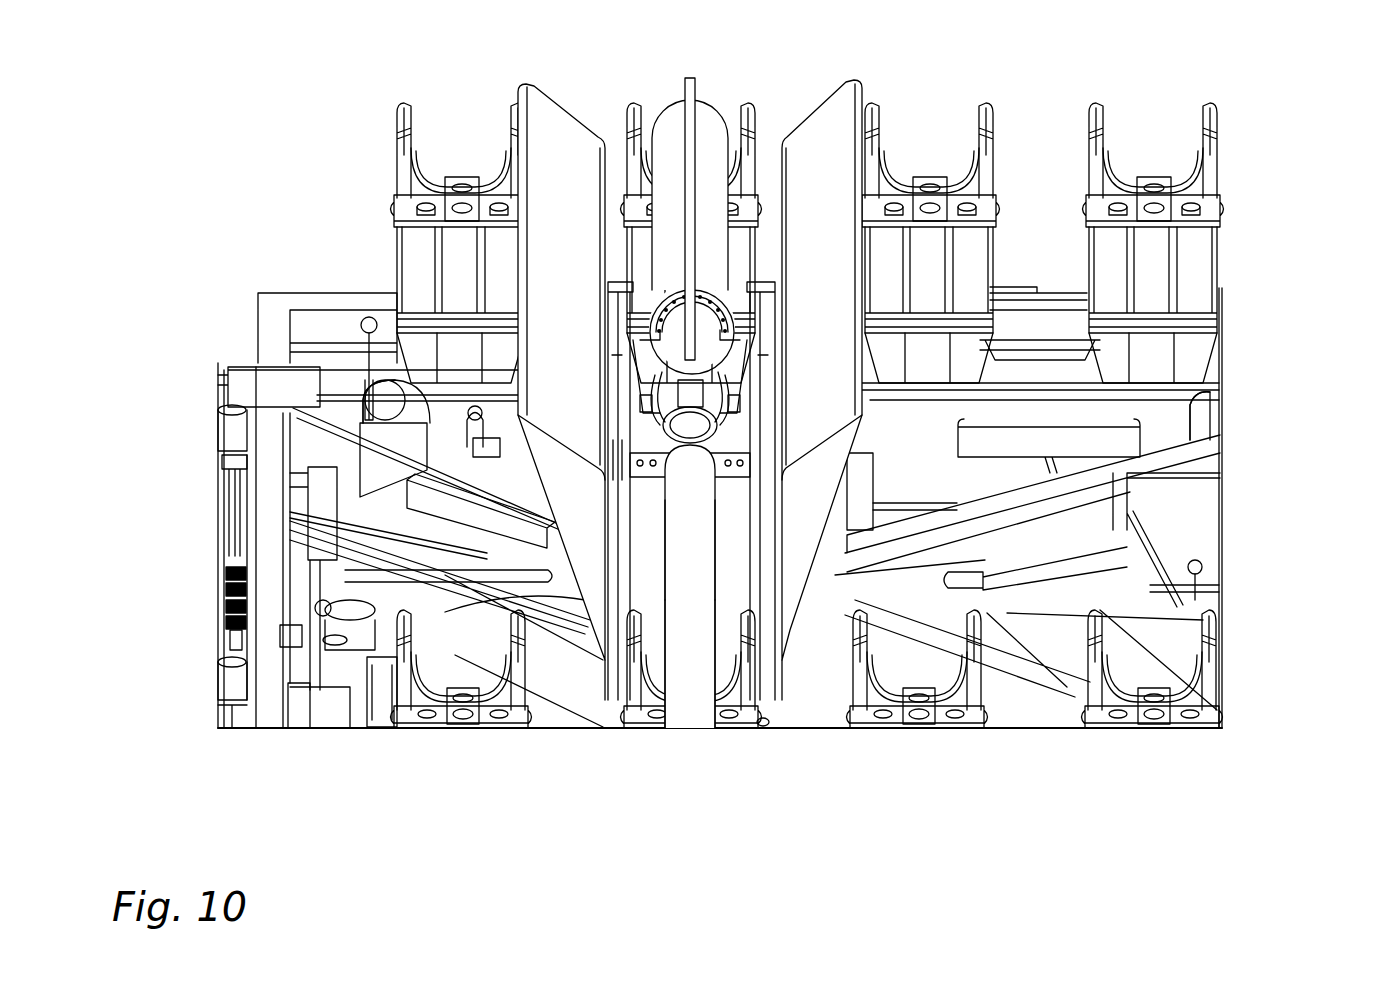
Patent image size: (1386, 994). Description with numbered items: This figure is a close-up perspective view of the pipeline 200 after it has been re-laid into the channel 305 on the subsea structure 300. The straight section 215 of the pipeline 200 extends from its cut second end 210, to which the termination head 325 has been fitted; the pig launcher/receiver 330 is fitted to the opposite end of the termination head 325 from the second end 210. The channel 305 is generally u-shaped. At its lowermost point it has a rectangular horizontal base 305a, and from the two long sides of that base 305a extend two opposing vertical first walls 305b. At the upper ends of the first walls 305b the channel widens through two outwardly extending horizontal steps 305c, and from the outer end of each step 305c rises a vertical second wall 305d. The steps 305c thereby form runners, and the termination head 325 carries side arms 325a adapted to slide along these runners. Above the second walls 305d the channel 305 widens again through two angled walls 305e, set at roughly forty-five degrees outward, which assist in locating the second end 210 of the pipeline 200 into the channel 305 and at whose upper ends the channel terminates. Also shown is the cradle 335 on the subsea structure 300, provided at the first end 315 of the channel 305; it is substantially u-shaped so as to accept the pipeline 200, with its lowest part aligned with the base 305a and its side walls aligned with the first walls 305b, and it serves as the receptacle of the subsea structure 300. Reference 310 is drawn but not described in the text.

The pipeline 200 is at (670, 738).
The second end 210 is at (702, 478).
The straight section 215 is at (687, 572).
The subsea structure 300 is at (285, 667).
The channel 305 is at (828, 168).
The horizontal base 305a is at (727, 642).
The first walls 305b is at (757, 673).
The horizontal steps 305c is at (613, 570).
The second walls 305d is at (607, 507).
The angled walls 305e is at (833, 500).
The guide plate 310 is at (547, 110).
The first end 315 is at (597, 626).
The termination head 325 is at (667, 366).
The side arms 325a is at (762, 343).
The pig launcher/receiver 330 is at (667, 123).
The cradle 335 is at (737, 730).